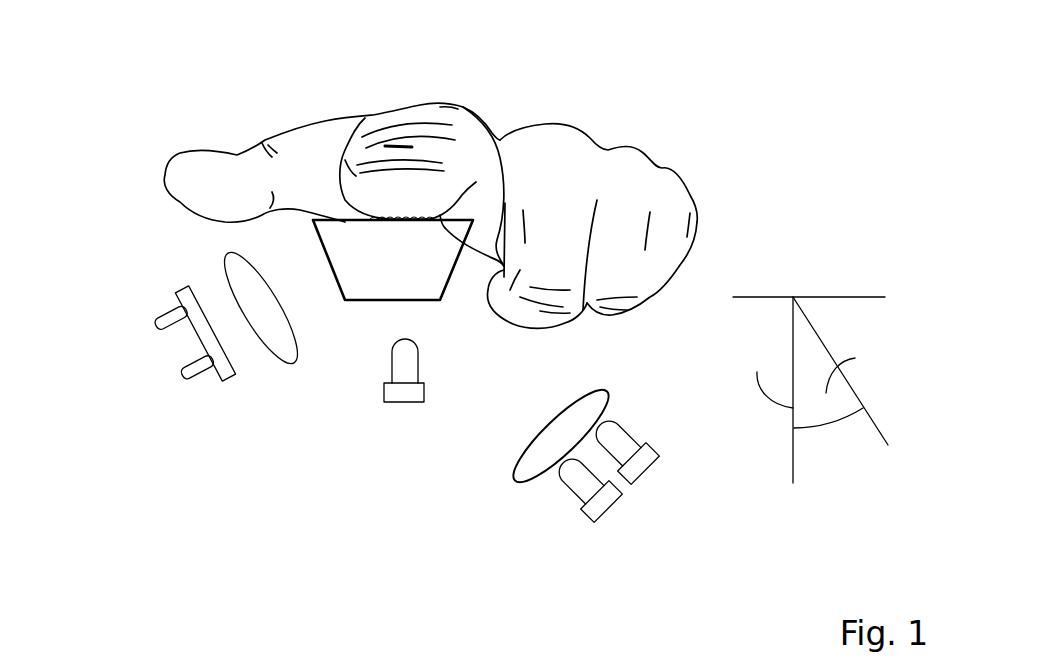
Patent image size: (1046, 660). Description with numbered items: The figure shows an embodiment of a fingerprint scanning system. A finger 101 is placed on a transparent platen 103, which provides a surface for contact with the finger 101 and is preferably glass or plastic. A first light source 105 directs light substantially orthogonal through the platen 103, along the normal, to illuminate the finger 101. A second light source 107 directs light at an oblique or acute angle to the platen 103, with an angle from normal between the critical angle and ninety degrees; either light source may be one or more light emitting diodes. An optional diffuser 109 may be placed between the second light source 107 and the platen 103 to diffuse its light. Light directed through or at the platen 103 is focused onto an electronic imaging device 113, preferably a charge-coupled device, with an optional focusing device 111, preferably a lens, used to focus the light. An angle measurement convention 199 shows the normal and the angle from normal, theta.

The finger 101 is at (349, 197).
The transparent platen 103 is at (393, 258).
The first light source 105 is at (403, 402).
The second light source 107 is at (592, 568).
The diffuser 109 is at (597, 395).
The focusing device 111 is at (285, 362).
The electronic imaging device 113 is at (186, 289).
The angle measurement convention 199 is at (798, 277).